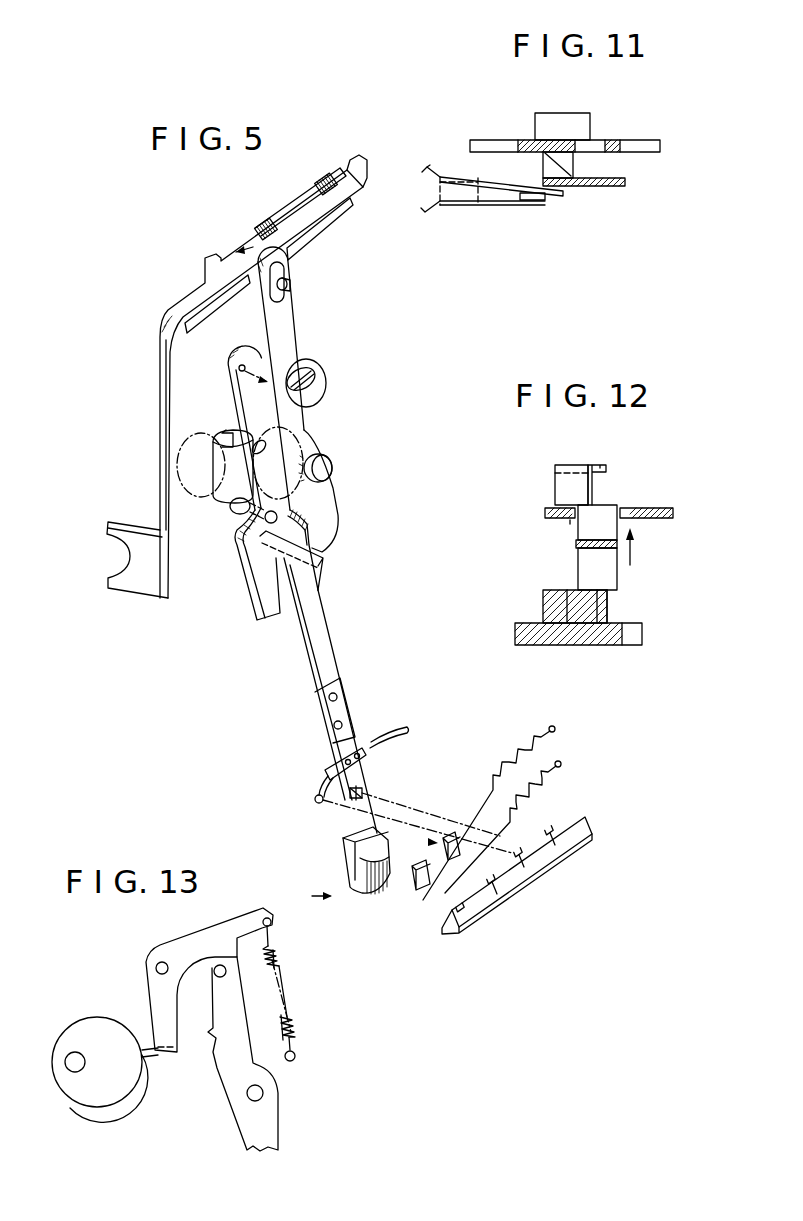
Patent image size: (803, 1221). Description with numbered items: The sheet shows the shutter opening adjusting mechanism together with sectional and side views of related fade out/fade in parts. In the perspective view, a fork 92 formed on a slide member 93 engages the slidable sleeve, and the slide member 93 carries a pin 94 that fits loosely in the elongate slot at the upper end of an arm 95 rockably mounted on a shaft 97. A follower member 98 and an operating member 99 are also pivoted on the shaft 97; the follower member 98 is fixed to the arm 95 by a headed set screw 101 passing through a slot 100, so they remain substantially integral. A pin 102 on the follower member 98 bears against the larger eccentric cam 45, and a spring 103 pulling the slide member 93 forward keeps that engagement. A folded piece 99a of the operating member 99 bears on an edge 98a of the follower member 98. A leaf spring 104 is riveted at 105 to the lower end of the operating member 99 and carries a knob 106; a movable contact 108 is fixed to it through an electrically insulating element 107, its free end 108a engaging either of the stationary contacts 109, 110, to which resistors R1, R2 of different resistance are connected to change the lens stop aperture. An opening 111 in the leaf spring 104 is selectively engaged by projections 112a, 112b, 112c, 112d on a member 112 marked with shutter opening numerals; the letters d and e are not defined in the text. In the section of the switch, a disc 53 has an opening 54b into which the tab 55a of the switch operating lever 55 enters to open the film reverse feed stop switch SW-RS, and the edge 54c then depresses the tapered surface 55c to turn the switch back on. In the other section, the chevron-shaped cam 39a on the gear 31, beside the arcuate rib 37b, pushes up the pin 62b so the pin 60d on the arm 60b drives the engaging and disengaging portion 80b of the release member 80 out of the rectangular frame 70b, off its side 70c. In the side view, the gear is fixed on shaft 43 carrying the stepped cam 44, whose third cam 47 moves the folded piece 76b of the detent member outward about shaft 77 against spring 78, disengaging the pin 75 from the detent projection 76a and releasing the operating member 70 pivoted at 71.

In FIG. 5, the fork 92 is at (112, 553).
In FIG. 5, the slide member 93 is at (168, 330).
In FIG. 5, the pin 94 is at (291, 282).
In FIG. 5, the arm 95 is at (300, 338).
In FIG. 5, the shaft 97 is at (333, 468).
In FIG. 5, the follower member 98 is at (240, 407).
In FIG. 5, the edge of follower member 98a is at (289, 595).
In FIG. 5, the operating member 99 is at (334, 527).
In FIG. 5, the folded piece 99a is at (278, 560).
In FIG. 5, the slot 100 is at (314, 399).
In FIG. 5, the headed set screw 101 is at (319, 371).
In FIG. 5, the pin 102 is at (240, 528).
In FIG. 5, the spring 103 is at (282, 216).
In FIG. 5, the leaf spring 104 is at (343, 722).
In FIG. 5, the rivet 105 is at (334, 724).
In FIG. 5, the knob 106 is at (374, 892).
In FIG. 5, the electrically insulating element 107 is at (364, 764).
In FIG. 5, the movable contact 108 is at (325, 771).
In FIG. 5, the free end of movable contact 108a is at (316, 803).
In FIG. 5, the stationary contact 109 is at (450, 833).
In FIG. 5, the stationary contact 110 is at (418, 866).
In FIG. 5, the opening 111 is at (363, 792).
In FIG. 5, the member 112 is at (498, 917).
In FIG. 5, the projection 112a is at (455, 910).
In FIG. 5, the projection 112b is at (500, 884).
In FIG. 5, the projection 112c is at (526, 857).
In FIG. 5, the projection 112d is at (550, 826).
In FIG. 5, the larger eccentric cam 45 is at (231, 504).
In FIG. 5, the rotation direction d is at (318, 304).
In FIG. 5, the movement direction e is at (356, 886).
In FIG. 5, the resistor R1 is at (519, 759).
In FIG. 5, the resistor R2 is at (541, 778).
In FIG. 11, the disc 53 is at (661, 146).
In FIG. 11, the opening 54b is at (597, 140).
In FIG. 11, the edge of opening 54c is at (612, 140).
In FIG. 11, the switch operating lever 55 is at (625, 184).
In FIG. 11, the engaging and disengaging portion 55a is at (563, 176).
In FIG. 11, the tapered surface 55c is at (565, 158).
In FIG. 11, the film reverse feed stop switch SW-RS is at (462, 207).
In FIG. 12, the gear 31 is at (638, 640).
In FIG. 12, the arcuate rib 37b is at (543, 601).
In FIG. 12, the chevron-shaped cam 39a is at (607, 607).
In FIG. 12, the arm of two arm member 60b is at (578, 546).
In FIG. 12, the pin 60d is at (605, 512).
In FIG. 12, the pin 62b is at (617, 582).
In FIG. 12, the rectangular frame 70b is at (561, 524).
In FIG. 12, the side of rectangular frame 70c is at (545, 514).
In FIG. 12, the release member 80 is at (600, 465).
In FIG. 12, the engaging and disengaging portion 80b is at (562, 488).
In FIG. 13, the shaft 43 is at (74, 1054).
In FIG. 13, the stepped cam 44 is at (90, 1109).
In FIG. 13, the third cam 47 is at (148, 1060).
In FIG. 13, the operating member 70 is at (279, 1087).
In FIG. 13, the pivot 71 is at (248, 1097).
In FIG. 13, the pin 75 is at (217, 977).
In FIG. 13, the detent projection 76a is at (233, 950).
In FIG. 13, the folded piece 76b is at (170, 1054).
In FIG. 13, the shaft 77 is at (155, 969).
In FIG. 13, the spring 78 is at (290, 980).